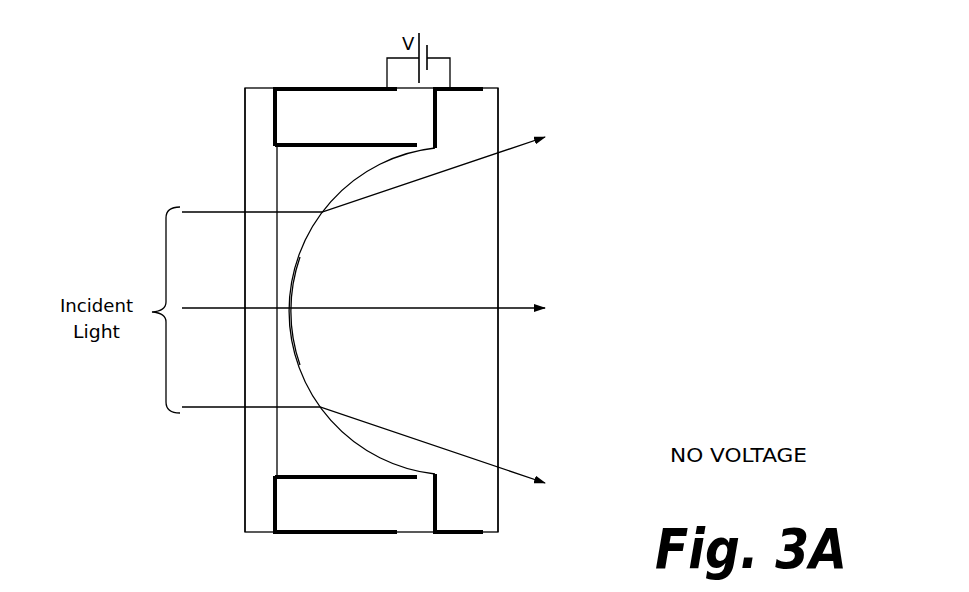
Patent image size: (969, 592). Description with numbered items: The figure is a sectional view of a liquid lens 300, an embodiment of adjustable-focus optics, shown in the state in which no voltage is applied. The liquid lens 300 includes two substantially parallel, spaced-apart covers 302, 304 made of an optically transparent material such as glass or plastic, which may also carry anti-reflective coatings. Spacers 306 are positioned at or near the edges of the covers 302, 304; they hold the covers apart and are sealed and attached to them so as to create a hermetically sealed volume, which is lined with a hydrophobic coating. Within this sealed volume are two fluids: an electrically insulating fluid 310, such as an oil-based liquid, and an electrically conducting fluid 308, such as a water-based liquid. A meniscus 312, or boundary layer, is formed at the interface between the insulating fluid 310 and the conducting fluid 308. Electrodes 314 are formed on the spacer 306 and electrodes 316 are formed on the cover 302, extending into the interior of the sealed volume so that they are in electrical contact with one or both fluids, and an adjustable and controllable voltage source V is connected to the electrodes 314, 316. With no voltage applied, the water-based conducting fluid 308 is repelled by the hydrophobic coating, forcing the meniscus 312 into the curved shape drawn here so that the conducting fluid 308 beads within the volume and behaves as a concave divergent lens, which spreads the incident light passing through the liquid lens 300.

The liquid lens 300 is at (681, 93).
The cover 302 is at (485, 375).
The cover 304 is at (248, 493).
The spacers 306 is at (379, 310).
The electrically conducting fluid 308 is at (413, 225).
The electrically insulating fluid 310 is at (295, 170).
The meniscus 312 is at (302, 257).
The electrodes 314 is at (275, 89).
The electrodes 316 is at (478, 88).